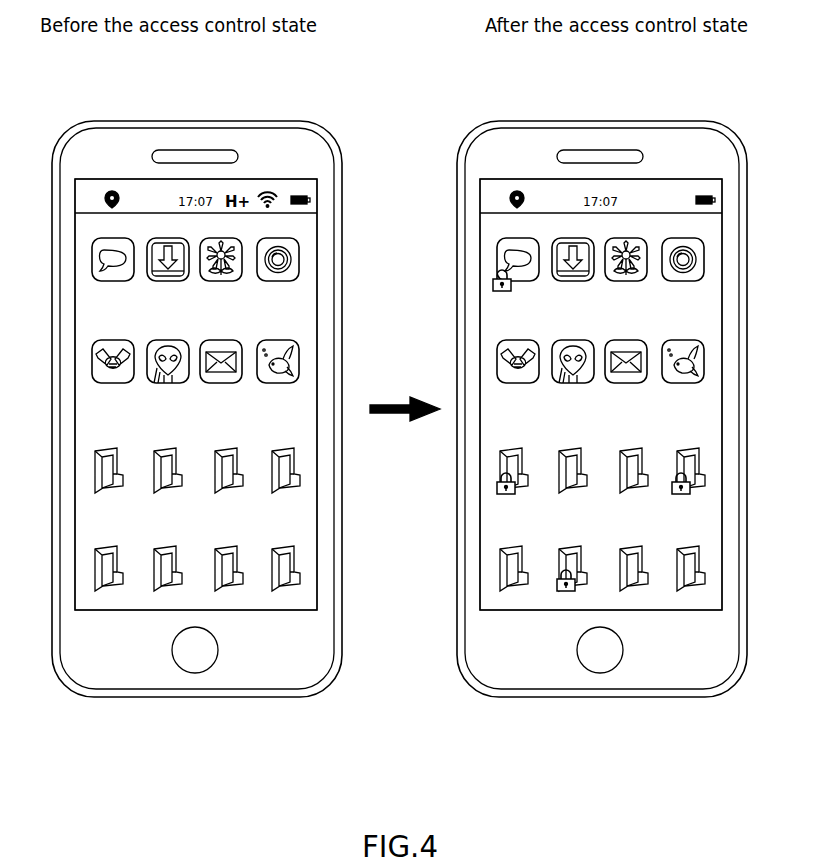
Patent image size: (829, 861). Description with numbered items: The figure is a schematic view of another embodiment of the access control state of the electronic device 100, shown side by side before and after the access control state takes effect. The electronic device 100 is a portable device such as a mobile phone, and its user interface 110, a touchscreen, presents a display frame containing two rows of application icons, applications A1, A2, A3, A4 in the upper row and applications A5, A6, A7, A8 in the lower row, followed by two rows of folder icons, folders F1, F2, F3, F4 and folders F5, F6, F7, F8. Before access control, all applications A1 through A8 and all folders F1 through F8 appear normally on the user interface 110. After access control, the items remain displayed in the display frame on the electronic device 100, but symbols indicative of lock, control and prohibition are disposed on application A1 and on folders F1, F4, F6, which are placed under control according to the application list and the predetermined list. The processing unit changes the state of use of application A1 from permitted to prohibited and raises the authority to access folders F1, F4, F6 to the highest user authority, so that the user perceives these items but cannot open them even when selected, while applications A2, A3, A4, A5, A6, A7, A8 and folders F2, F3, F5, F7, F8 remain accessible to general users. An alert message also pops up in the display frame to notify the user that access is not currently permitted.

The electronic device 100 is at (196, 121).
The user interface 110 is at (310, 225).
The application A1 is at (110, 282).
The application A2 is at (165, 282).
The application A3 is at (220, 282).
The application A4 is at (275, 282).
The application A5 is at (110, 383).
The application A6 is at (165, 383).
The application A7 is at (220, 383).
The application A8 is at (275, 383).
The folder F1 is at (106, 492).
The folder F2 is at (165, 492).
The folder F3 is at (226, 492).
The folder F4 is at (283, 492).
The folder F5 is at (106, 590).
The folder F6 is at (165, 590).
The folder F7 is at (226, 590).
The folder F8 is at (283, 590).